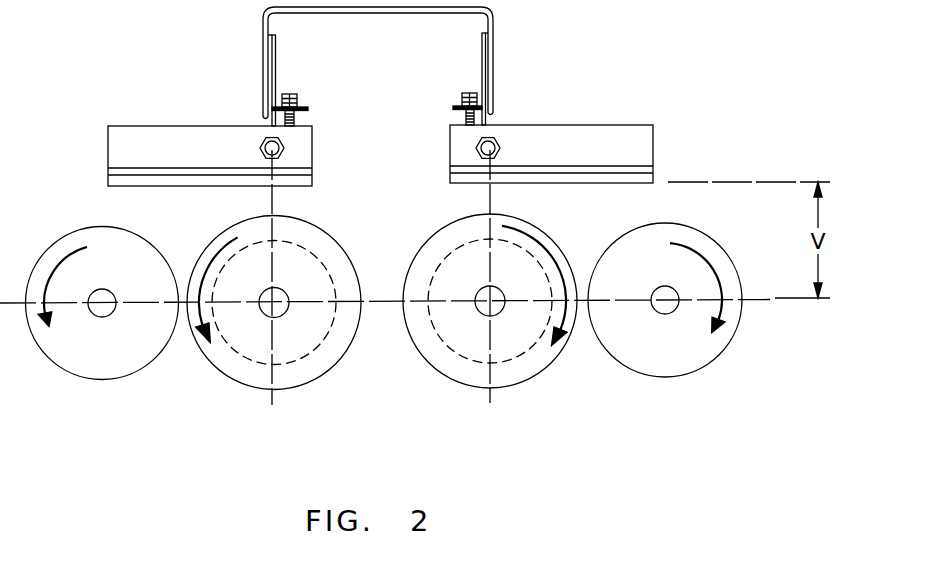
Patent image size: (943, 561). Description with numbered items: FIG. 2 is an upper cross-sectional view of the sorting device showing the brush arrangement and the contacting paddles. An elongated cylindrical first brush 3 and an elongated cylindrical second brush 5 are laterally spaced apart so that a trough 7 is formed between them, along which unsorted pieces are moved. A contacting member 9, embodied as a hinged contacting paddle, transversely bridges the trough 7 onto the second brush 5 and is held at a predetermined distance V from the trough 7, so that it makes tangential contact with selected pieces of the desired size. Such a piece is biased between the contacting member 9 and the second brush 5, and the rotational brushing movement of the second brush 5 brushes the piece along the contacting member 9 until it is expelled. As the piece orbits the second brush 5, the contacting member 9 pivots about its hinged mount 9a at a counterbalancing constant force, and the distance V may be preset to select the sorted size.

The first brush 3 is at (313, 373).
The second brush 5 is at (58, 366).
The trough 7 is at (185, 259).
The contacting member 9 is at (108, 151).
The hinged mount 9a is at (285, 149).